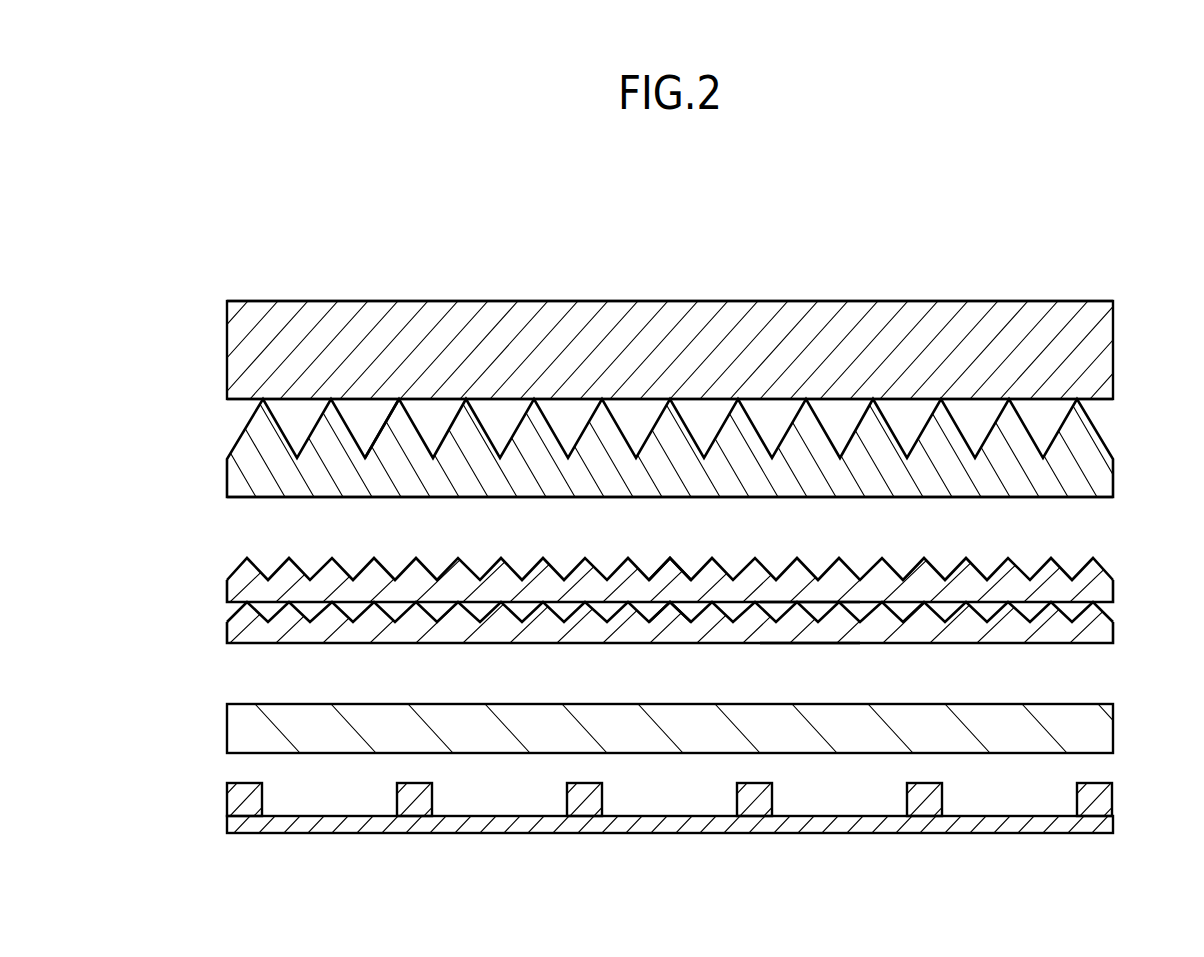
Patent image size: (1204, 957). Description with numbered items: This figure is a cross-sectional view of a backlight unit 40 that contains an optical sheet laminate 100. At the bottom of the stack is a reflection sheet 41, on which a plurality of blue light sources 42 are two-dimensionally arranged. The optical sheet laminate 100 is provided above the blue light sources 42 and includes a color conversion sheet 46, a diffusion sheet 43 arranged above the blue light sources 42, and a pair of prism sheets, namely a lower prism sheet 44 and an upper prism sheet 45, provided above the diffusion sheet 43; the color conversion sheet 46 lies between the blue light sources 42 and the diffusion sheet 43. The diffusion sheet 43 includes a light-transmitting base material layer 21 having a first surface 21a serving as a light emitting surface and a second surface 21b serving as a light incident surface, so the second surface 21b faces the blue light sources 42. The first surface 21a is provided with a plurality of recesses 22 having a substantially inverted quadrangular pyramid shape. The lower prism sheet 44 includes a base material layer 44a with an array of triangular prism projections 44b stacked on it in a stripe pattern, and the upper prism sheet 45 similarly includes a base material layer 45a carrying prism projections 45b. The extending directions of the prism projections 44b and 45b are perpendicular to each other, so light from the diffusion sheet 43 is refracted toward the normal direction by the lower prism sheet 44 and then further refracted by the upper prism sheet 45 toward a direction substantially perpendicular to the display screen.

The optical sheet laminate 100 is at (1123, 301).
The backlight unit 40 is at (953, 261).
The reflection sheet 41 is at (227, 822).
The blue light sources 42 is at (397, 798).
The diffusion sheet 43 is at (219, 628).
The base material layer 21 is at (250, 637).
The first surface 21a is at (702, 560).
The second surface 21b is at (818, 605).
The recesses 22 is at (480, 563).
The lower prism sheet 44 is at (224, 462).
The base material layer 44a is at (275, 497).
The prism projections 44b is at (390, 420).
The upper prism sheet 45 is at (224, 353).
The base material layer 45a is at (295, 399).
The prism projections 45b is at (282, 300).
The color conversion sheet 46 is at (227, 722).